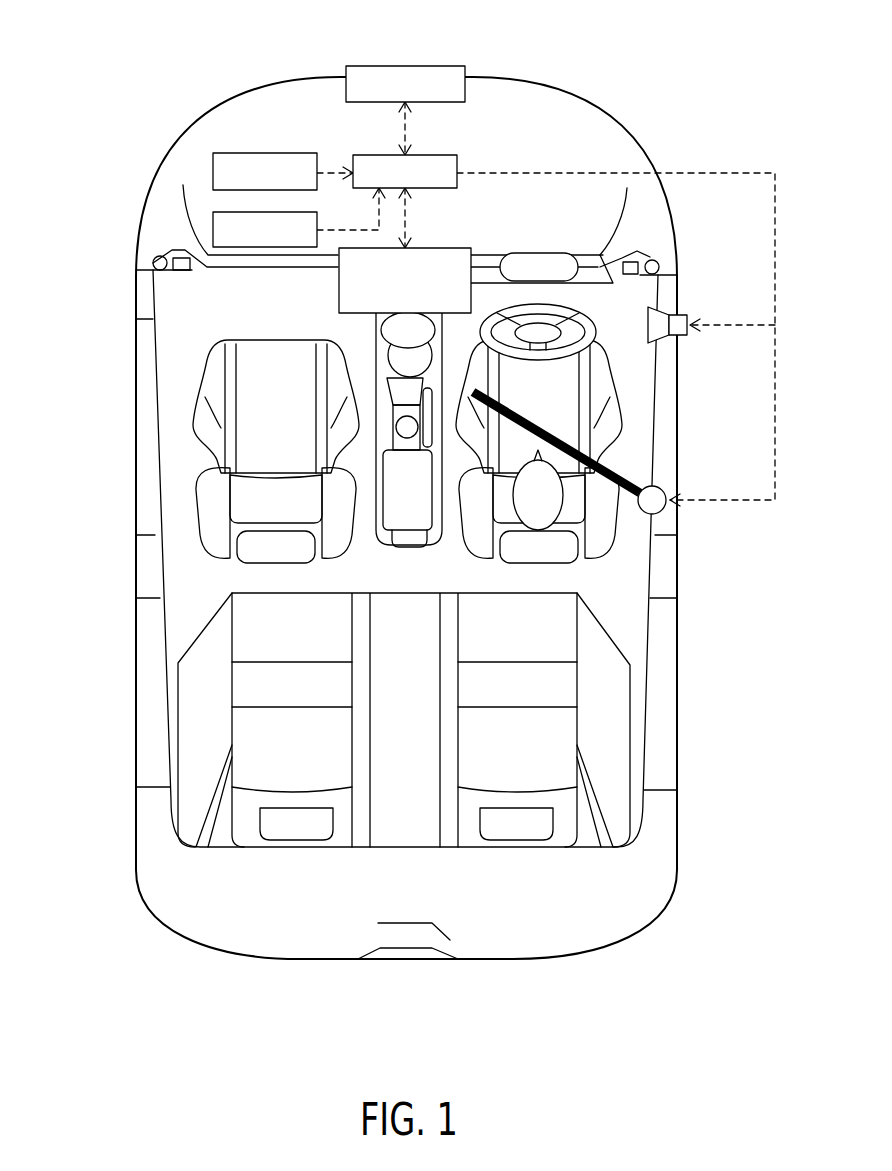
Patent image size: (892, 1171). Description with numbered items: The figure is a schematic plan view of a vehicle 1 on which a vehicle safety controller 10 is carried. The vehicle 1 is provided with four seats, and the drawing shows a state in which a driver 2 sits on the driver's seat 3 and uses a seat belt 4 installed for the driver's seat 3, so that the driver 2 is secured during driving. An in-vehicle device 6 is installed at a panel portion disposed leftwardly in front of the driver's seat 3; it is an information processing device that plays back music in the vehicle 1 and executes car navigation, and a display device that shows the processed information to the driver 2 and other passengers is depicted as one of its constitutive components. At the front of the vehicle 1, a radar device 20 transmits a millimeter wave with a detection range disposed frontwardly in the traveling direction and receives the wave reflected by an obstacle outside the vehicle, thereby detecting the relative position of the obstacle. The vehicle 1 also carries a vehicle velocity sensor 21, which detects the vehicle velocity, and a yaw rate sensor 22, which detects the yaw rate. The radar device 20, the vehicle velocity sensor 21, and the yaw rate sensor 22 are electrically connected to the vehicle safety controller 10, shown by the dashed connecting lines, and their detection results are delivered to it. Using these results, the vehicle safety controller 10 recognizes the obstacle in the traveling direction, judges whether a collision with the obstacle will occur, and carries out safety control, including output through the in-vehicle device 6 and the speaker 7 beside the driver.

The vehicle 1 is at (155, 893).
The driver 2 is at (555, 510).
The driver's seat 3 is at (573, 385).
The seat belt 4 is at (641, 488).
The in-vehicle device 6 is at (441, 248).
The speaker 7 is at (688, 310).
The vehicle safety controller 10 is at (446, 155).
The radar device 20 is at (393, 66).
The vehicle velocity sensor 21 is at (249, 153).
The yaw rate sensor 22 is at (213, 230).